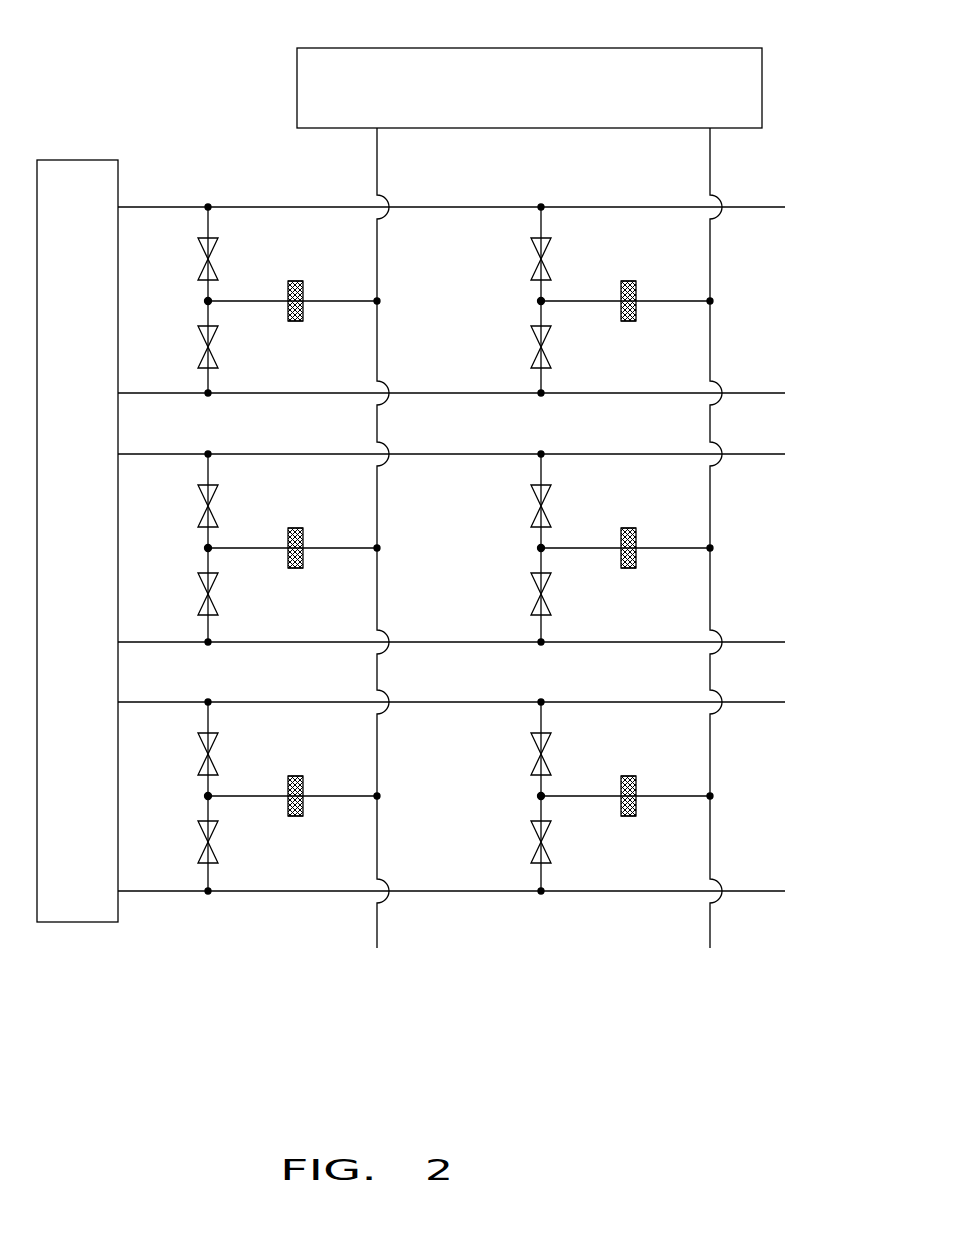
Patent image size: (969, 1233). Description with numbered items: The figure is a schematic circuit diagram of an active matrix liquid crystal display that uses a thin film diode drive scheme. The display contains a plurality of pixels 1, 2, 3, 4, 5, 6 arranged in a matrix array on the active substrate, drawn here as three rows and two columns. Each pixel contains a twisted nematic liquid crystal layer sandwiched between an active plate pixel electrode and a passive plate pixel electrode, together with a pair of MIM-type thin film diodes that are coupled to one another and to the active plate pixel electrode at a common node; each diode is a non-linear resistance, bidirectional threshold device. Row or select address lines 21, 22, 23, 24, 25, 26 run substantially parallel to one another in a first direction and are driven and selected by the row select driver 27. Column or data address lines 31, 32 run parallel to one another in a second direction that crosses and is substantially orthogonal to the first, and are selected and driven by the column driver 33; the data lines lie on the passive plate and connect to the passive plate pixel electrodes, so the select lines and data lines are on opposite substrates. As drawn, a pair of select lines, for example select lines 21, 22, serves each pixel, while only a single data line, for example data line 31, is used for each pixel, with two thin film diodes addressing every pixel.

The pixel 1 is at (323, 252).
The pixel 2 is at (252, 528).
The pixel 3 is at (252, 825).
The pixel 4 is at (468, 300).
The pixel 5 is at (569, 529).
The pixel 6 is at (569, 778).
The row or select address line 21 is at (752, 207).
The row or select address line 22 is at (752, 393).
The row or select address line 23 is at (752, 454).
The row or select address line 24 is at (752, 642).
The row or select address line 25 is at (752, 702).
The row or select address line 26 is at (752, 891).
The row select driver 27 is at (82, 180).
The column or data address line 31 is at (377, 157).
The column or data address line 32 is at (708, 158).
The column driver 33 is at (678, 57).